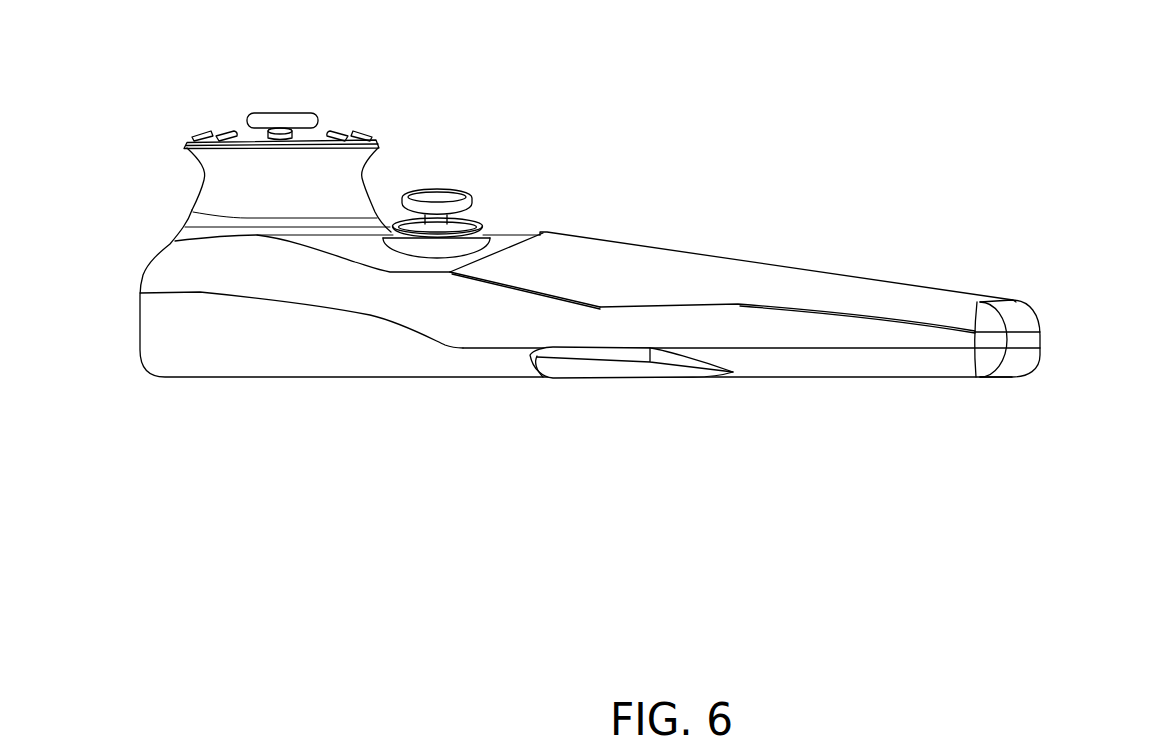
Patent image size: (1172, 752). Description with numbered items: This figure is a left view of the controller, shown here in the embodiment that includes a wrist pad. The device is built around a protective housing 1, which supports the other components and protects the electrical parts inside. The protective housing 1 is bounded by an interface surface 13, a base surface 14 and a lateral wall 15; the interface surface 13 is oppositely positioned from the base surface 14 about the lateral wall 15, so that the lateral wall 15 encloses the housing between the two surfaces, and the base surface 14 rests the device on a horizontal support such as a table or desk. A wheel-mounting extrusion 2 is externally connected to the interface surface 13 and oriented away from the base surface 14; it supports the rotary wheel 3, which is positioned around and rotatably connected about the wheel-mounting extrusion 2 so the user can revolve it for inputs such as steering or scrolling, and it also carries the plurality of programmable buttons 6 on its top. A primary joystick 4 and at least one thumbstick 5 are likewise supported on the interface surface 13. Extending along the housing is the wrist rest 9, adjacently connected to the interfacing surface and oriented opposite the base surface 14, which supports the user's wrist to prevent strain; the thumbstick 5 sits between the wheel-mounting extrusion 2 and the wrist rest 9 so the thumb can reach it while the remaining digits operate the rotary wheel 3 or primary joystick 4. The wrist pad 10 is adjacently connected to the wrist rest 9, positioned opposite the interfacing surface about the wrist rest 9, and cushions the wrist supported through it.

The protective housing 1 is at (652, 111).
The wheel-mounting extrusion 2 is at (322, 134).
The rotary wheel 3 is at (217, 183).
The primary joystick 4 is at (283, 120).
The thumbstick 5 is at (443, 193).
The programmable buttons 6 is at (202, 132).
The wrist rest 9 is at (490, 283).
The wrist pad 10 is at (690, 270).
The interface surface 13 is at (1022, 313).
The base surface 14 is at (918, 368).
The lateral wall 15 is at (1033, 343).